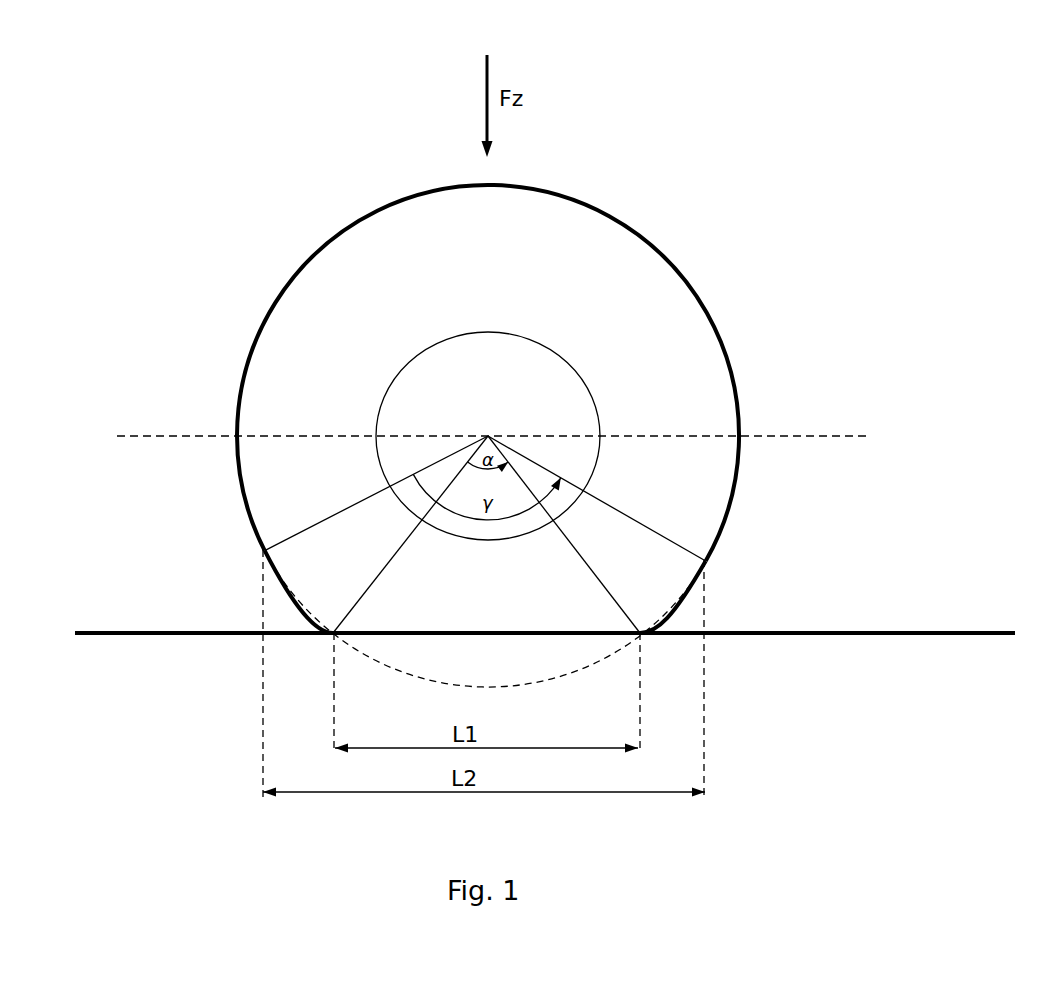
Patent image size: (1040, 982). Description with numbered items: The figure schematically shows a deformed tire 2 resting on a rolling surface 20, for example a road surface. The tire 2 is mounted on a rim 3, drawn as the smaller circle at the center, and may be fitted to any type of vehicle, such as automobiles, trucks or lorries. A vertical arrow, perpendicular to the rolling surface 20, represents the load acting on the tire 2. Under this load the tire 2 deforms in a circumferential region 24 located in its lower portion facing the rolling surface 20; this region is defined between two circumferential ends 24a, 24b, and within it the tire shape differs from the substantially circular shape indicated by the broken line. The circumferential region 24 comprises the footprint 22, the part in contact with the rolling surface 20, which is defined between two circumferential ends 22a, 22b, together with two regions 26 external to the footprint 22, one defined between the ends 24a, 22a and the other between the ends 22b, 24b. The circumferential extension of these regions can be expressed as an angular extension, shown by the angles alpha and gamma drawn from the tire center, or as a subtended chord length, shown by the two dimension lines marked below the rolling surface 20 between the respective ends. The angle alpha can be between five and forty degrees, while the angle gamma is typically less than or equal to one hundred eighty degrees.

The tire 2 is at (712, 295).
The rim 3 is at (500, 423).
The rolling surface 20 is at (545, 599).
The footprint 22 is at (486, 605).
The circumferential region 24 is at (230, 592).
The regions external to the footprint 26 is at (738, 597).
The circumferential end of the footprint 22a is at (334, 594).
The circumferential end of the footprint 22b is at (642, 594).
The circumferential end of the circumferential region 24a is at (307, 616).
The circumferential end of the circumferential region 24b is at (660, 616).